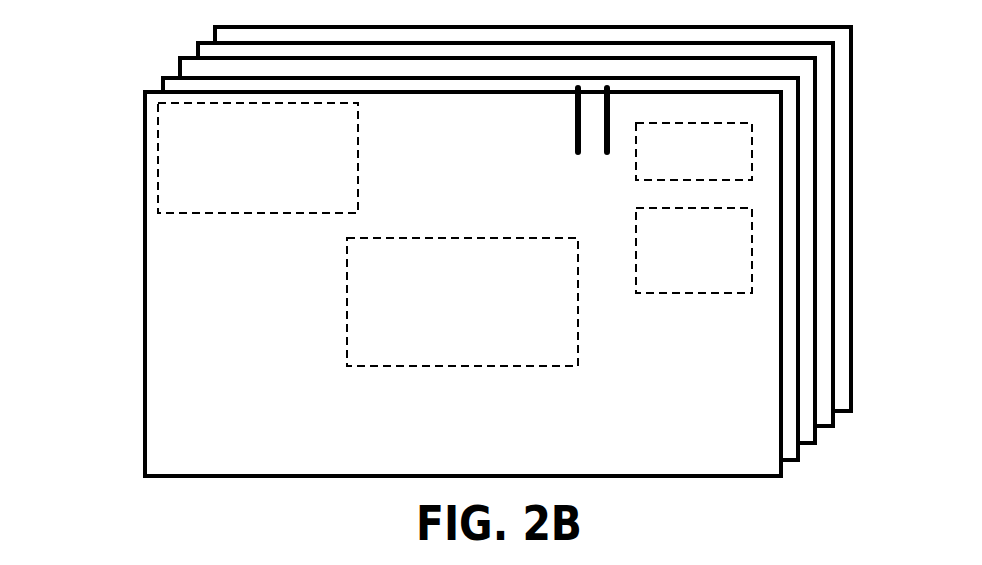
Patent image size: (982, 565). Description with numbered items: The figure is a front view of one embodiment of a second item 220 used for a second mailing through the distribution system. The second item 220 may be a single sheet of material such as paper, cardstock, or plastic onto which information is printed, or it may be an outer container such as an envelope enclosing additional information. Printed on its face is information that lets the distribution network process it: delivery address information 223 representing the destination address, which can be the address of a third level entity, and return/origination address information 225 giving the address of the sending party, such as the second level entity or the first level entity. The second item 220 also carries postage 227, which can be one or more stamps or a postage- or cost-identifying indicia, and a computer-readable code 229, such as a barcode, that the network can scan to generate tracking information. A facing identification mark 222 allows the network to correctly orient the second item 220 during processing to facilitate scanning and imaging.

The second item 220 is at (83, 273).
The facing identification mark 222 is at (575, 127).
The delivery address information 223 is at (408, 237).
The return/origination address information 225 is at (197, 213).
The postage 227 is at (635, 159).
The computer-readable code 229 is at (635, 283).